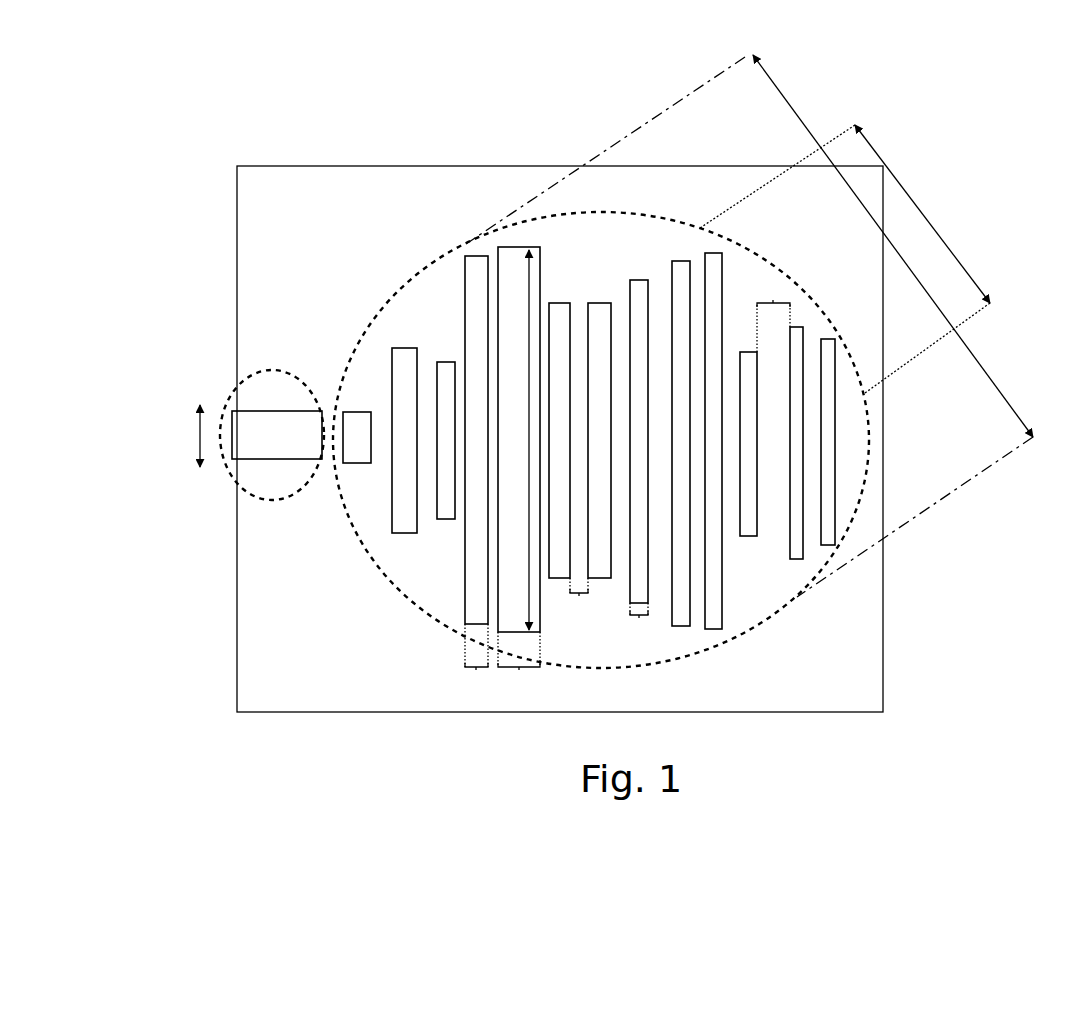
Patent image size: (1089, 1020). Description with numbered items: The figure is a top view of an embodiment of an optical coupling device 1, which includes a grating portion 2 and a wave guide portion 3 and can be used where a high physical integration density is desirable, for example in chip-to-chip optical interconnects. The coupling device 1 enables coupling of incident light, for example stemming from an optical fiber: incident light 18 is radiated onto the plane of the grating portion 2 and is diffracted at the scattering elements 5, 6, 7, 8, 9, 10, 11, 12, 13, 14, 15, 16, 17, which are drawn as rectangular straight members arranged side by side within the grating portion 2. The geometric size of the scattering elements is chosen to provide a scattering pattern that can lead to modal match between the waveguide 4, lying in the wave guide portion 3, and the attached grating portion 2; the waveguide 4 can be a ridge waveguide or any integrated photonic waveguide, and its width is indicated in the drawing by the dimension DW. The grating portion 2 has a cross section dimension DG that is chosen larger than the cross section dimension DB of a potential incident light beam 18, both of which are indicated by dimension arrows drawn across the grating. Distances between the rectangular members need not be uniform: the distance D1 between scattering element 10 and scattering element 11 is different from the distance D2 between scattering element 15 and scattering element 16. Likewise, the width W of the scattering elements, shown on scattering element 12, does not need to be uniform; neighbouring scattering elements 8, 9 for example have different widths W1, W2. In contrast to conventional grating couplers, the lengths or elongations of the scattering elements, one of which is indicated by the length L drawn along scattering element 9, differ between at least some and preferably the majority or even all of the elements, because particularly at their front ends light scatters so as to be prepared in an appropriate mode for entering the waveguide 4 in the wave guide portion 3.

The optical coupling device 1 is at (782, 713).
The grating portion 2 is at (408, 601).
The wave guide portion 3 is at (272, 370).
The waveguide 4 is at (305, 411).
The scattering element 5 is at (352, 463).
The scattering element 6 is at (403, 533).
The scattering element 7 is at (445, 519).
The scattering element 8 is at (475, 256).
The scattering element 9 is at (528, 247).
The scattering element 10 is at (558, 303).
The scattering element 11 is at (600, 303).
The scattering element 12 is at (640, 280).
The scattering element 13 is at (685, 626).
The scattering element 14 is at (713, 253).
The scattering element 15 is at (751, 536).
The scattering element 16 is at (797, 327).
The scattering element 17 is at (829, 339).
The incident light beam 18 is at (920, 358).
The cross section dimension of incident light beam DB is at (940, 232).
The cross section dimension of grating portion DG is at (990, 377).
The waveguide width DW is at (195, 436).
The bar length L is at (529, 508).
The width of scattering elements W is at (639, 624).
The width of scattering element 8 W1 is at (479, 661).
The width of scattering element 9 W2 is at (519, 665).
The distance between scattering elements 10 and 11 D1 is at (583, 600).
The distance between scattering elements 15 and 16 D2 is at (773, 315).